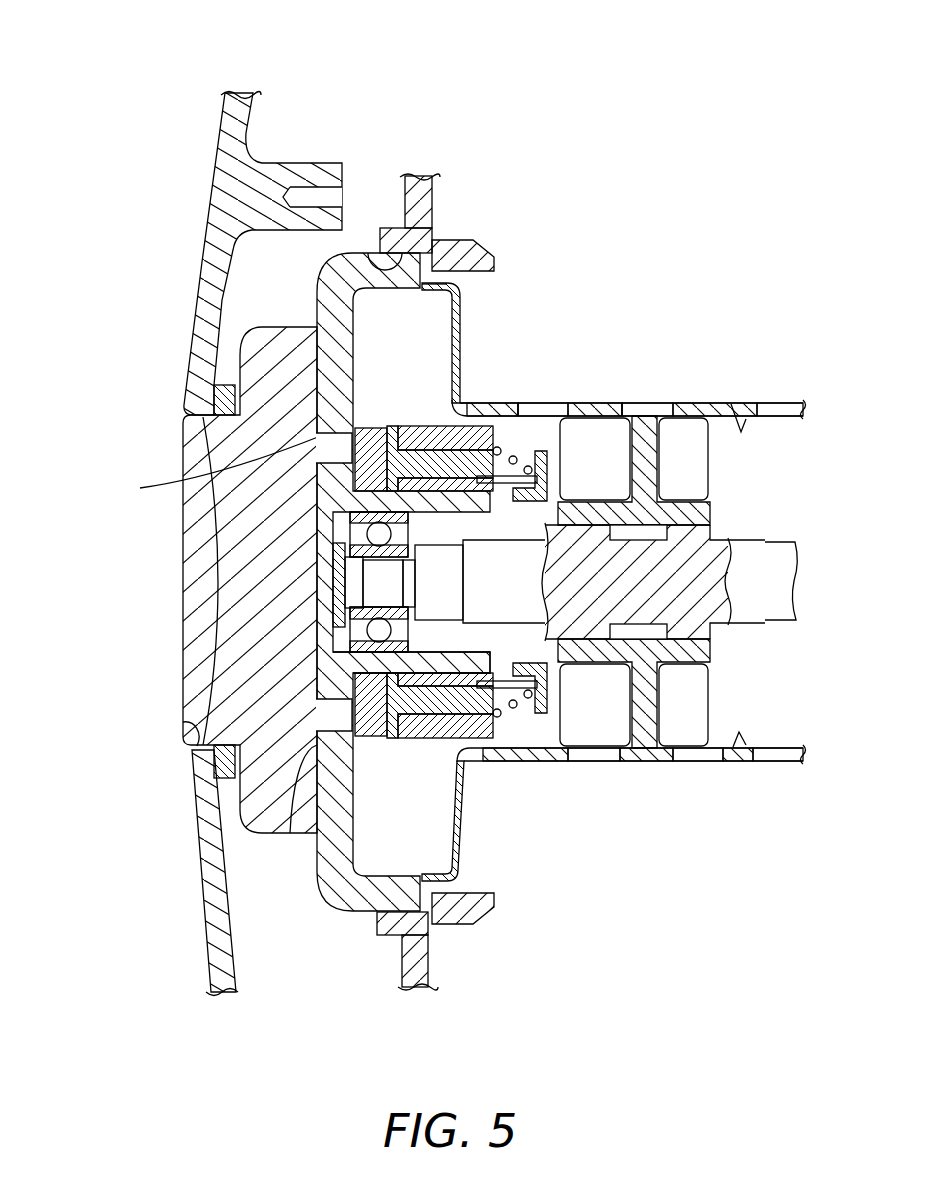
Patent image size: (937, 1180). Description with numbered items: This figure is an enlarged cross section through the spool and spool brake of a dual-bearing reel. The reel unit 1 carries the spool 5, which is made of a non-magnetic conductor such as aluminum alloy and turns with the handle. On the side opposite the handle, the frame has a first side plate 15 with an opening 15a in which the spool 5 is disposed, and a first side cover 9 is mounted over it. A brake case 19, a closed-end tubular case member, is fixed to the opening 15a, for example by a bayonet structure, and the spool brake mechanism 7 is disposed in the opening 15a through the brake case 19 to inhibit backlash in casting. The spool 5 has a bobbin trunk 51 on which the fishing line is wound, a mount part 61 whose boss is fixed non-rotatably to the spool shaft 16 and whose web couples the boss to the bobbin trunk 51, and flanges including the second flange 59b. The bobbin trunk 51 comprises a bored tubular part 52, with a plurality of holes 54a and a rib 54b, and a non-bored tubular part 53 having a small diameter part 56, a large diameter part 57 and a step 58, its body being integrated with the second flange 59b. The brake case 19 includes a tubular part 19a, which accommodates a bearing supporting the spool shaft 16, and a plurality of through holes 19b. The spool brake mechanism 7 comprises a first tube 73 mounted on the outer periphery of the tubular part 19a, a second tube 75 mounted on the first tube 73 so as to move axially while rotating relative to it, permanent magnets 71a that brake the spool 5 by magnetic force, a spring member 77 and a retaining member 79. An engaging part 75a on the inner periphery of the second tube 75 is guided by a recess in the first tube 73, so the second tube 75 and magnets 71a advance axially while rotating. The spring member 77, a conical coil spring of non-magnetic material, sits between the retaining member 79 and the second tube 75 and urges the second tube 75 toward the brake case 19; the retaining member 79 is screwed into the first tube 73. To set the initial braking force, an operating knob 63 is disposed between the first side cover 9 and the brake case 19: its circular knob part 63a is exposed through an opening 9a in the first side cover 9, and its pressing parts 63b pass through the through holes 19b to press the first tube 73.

The reel unit 1 is at (184, 80).
The spool 5 is at (757, 355).
The spool brake mechanism 7 is at (493, 780).
The first side cover 9 is at (224, 191).
The opening 9a is at (182, 721).
The first side plate 15 is at (433, 207).
The opening 15a is at (371, 253).
The spool shaft 16 is at (794, 523).
The brake case 19 is at (301, 298).
The tubular part 19a is at (460, 664).
The through holes 19b is at (290, 835).
The bobbin trunk 51 is at (657, 622).
The bored tubular part 52 is at (681, 785).
The non-bored tubular part 53 is at (576, 386).
The holes 54a is at (712, 405).
The rib 54b is at (742, 432).
The small diameter part 56 is at (597, 407).
The large diameter part 57 is at (460, 388).
The step 58 is at (525, 407).
The second flange 59b is at (458, 337).
The mount part 61 is at (681, 476).
The operating knob 63 is at (76, 466).
The knob part 63a is at (192, 527).
The pressing parts 63b is at (205, 470).
The magnets 71a is at (460, 350).
The first tube 73 is at (368, 430).
The second tube 75 is at (392, 428).
The engaging part 75a is at (496, 493).
The spring member 77 is at (526, 723).
The retaining member 79 is at (548, 468).